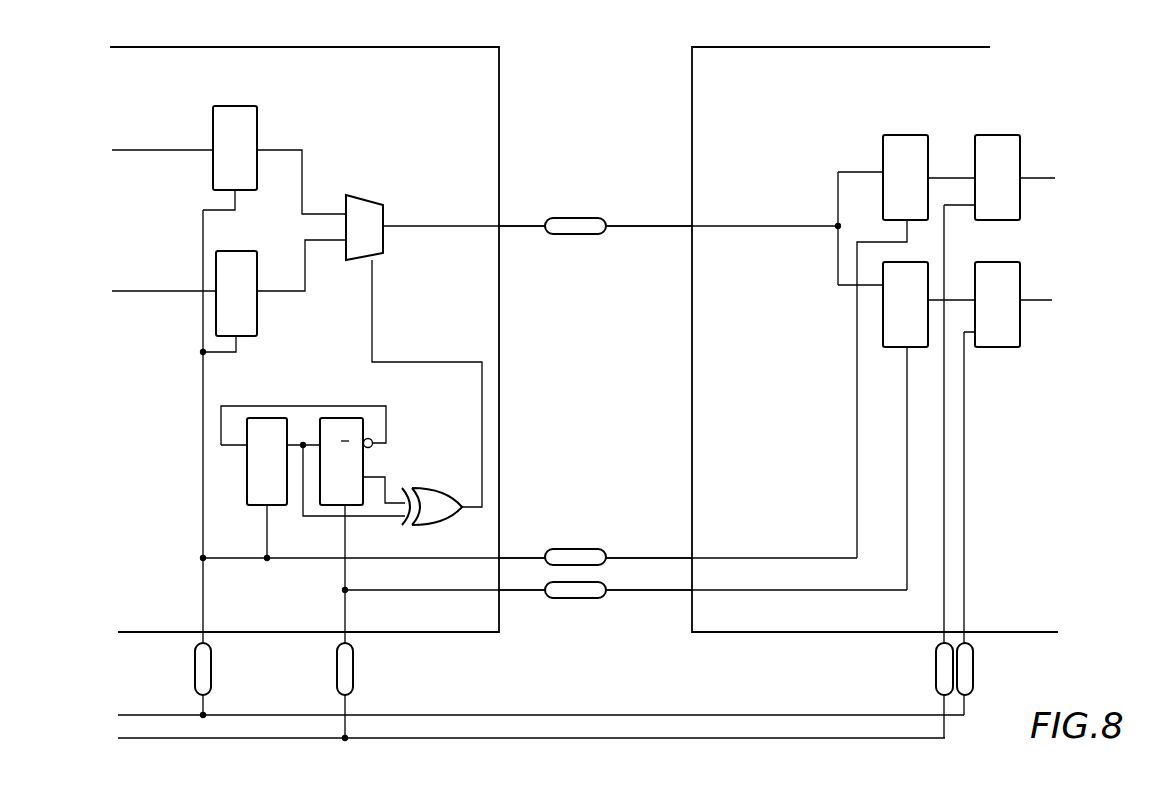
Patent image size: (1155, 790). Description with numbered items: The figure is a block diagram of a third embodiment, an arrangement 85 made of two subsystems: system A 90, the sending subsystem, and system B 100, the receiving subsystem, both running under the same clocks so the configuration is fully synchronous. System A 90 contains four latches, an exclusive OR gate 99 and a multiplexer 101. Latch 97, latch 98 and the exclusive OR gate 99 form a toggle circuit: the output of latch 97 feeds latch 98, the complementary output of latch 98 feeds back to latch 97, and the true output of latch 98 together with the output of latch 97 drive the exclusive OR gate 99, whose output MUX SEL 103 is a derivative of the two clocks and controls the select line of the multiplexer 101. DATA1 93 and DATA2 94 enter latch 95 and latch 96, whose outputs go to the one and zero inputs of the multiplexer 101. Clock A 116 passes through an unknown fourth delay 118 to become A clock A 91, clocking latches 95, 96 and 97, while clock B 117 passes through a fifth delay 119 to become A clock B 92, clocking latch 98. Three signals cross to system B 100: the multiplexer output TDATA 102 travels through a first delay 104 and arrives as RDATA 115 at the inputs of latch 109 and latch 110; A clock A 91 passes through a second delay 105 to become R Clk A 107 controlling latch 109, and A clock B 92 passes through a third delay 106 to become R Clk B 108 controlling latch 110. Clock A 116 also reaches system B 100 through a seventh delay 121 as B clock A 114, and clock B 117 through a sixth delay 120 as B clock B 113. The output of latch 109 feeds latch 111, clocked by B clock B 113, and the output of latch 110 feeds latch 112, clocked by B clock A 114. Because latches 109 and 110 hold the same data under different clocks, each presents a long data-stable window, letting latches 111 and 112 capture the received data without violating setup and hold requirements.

The arrangement 85 is at (596, 52).
The system A 90 is at (244, 47).
The system B 100 is at (887, 47).
The DATA1 93 is at (141, 130).
The DATA2 94 is at (144, 268).
The latch 95 is at (243, 129).
The latch 96 is at (244, 274).
The latch 97 is at (274, 479).
The latch 98 is at (366, 464).
The exclusive OR gate 99 is at (433, 522).
The multiplexer 101 is at (383, 177).
The TDATA 102 is at (444, 205).
The MUX SEL 103 is at (436, 350).
The delay D1 104 is at (580, 205).
The delay D2 105 is at (561, 518).
The delay D3 106 is at (569, 627).
The R Clk A 107 is at (773, 540).
The R Clk B 108 is at (805, 578).
The latch 109 is at (912, 158).
The latch 110 is at (911, 337).
The latch 111 is at (1004, 158).
The latch 112 is at (1004, 285).
The B clock B 113 is at (922, 482).
The B clock A 114 is at (1075, 503).
The RDATA 115 is at (766, 214).
The clock A 116 is at (101, 692).
The clock B 117 is at (155, 731).
The delay D4 118 is at (253, 672).
The delay D5 119 is at (390, 670).
The delay D6 120 is at (896, 672).
The delay D7 121 is at (1012, 668).
The A clock A 91 is at (150, 568).
The A clock B 92 is at (432, 604).